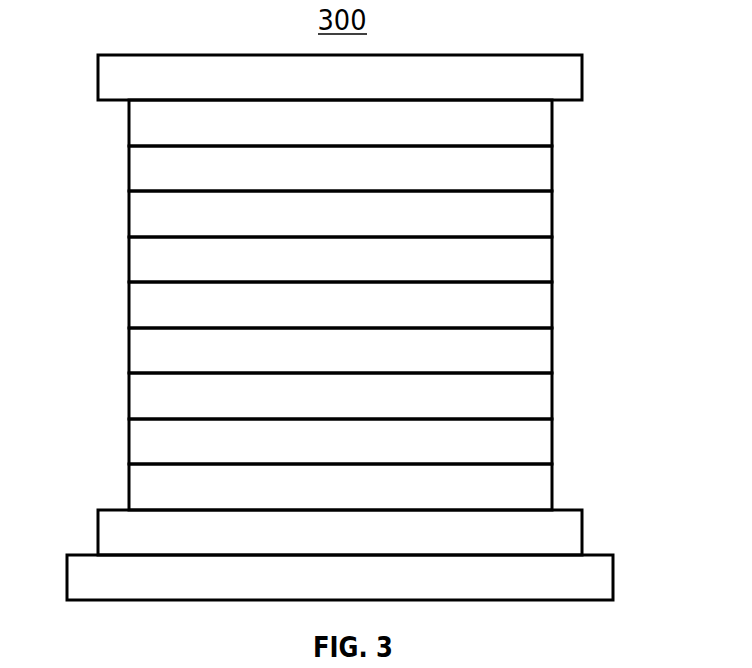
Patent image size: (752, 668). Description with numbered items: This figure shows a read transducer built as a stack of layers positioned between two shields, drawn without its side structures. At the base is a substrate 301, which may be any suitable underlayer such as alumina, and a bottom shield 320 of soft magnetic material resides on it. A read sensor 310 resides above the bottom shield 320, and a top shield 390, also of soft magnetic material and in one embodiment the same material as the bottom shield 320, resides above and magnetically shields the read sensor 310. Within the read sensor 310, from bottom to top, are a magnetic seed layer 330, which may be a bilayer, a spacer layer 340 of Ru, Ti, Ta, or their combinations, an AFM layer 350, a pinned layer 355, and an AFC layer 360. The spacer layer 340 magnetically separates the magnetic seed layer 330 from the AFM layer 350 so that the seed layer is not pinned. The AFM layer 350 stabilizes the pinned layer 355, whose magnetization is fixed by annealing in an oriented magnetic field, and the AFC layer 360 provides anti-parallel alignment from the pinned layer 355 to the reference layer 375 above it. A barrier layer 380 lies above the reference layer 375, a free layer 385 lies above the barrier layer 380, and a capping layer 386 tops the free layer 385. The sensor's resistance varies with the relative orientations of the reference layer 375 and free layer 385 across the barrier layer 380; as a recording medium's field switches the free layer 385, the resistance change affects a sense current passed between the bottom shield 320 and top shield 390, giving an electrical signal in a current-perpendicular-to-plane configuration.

The substrate 301 is at (396, 575).
The read sensor 310 is at (353, 303).
The bottom shield 320 is at (409, 532).
The magnetic seed layer 330 is at (395, 485).
The spacer layer 340 is at (395, 440).
The AFM layer 350 is at (395, 394).
The pinned layer 355 is at (395, 348).
The AFC layer 360 is at (395, 303).
The reference layer 375 is at (405, 257).
The barrier layer 380 is at (405, 212).
The free layer 385 is at (405, 167).
The capping layer 386 is at (405, 121).
The top shield 390 is at (395, 77).